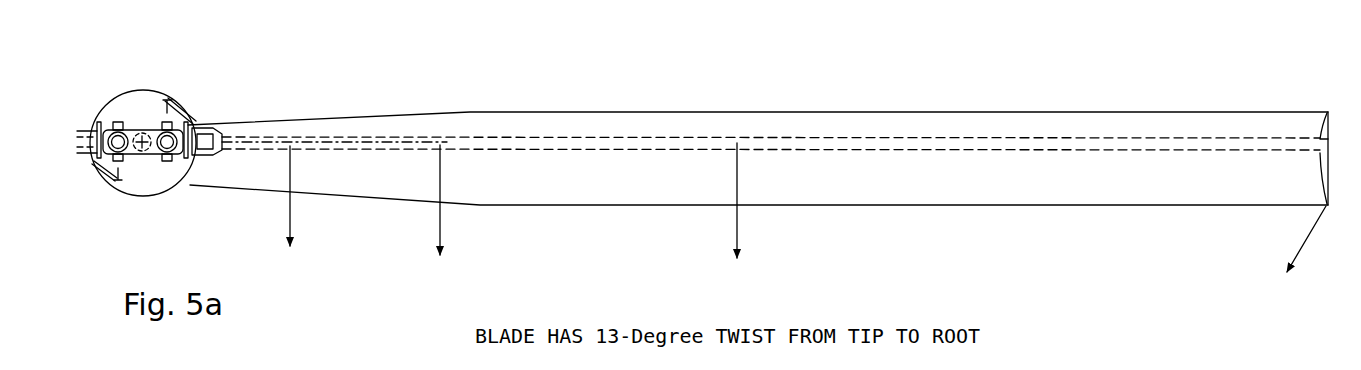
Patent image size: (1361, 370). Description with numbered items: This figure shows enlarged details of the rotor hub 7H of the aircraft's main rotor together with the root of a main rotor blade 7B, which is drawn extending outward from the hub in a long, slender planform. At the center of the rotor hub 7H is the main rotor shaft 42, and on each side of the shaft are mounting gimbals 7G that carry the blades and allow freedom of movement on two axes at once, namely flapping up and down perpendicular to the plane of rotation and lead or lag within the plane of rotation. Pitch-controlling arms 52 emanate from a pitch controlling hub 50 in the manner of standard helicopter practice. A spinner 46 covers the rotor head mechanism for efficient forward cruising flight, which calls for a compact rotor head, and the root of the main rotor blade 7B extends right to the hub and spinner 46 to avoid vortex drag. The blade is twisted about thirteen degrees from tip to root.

The main rotor blade 7B is at (550, 112).
The mounting gimbal 7G is at (168, 160).
The rotor hub 7H is at (123, 214).
The main rotor shaft 42 is at (145, 131).
The spinner 46 is at (107, 103).
The pitch controlling hub 50 is at (202, 152).
The pitch-controlling arm 52 is at (178, 103).